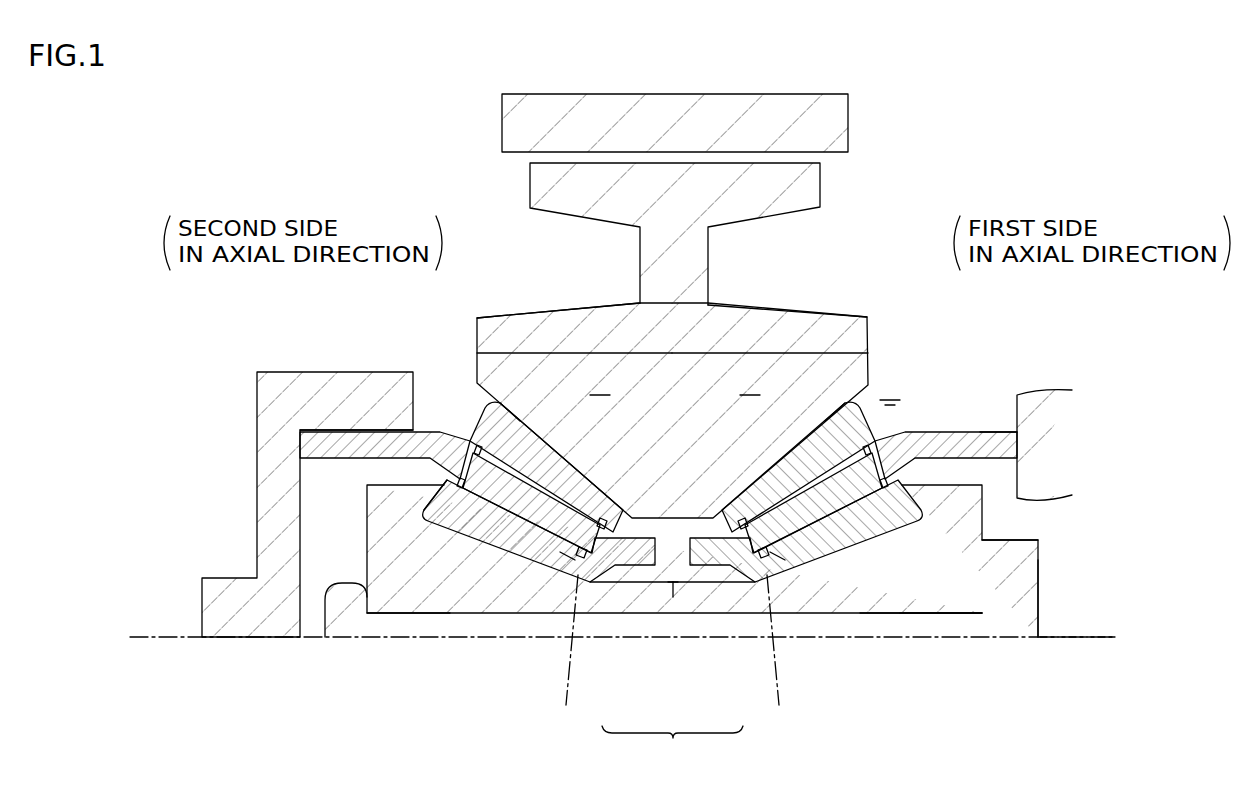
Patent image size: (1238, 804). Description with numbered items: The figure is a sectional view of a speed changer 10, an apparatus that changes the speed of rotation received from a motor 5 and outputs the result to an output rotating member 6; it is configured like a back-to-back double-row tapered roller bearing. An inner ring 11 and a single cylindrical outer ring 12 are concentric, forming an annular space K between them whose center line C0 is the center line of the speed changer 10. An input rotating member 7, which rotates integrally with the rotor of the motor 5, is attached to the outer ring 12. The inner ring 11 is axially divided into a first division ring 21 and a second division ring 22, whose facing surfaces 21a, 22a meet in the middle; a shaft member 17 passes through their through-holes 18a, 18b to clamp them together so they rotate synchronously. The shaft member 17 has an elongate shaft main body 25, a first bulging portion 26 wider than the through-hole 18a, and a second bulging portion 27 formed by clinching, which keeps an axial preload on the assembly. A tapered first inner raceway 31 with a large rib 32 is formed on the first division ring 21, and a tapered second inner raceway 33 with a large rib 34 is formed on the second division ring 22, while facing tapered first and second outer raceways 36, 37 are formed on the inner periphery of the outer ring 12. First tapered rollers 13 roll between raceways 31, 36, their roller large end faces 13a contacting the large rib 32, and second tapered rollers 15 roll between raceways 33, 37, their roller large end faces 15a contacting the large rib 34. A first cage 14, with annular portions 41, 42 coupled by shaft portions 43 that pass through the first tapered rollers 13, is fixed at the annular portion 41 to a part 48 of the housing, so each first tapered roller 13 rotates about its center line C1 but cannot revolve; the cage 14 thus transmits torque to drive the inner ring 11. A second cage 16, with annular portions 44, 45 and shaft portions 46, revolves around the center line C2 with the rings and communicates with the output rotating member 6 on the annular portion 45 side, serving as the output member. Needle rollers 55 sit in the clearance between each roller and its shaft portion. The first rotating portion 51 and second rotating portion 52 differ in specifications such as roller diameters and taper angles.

The motor 5 is at (826, 191).
The output rotating member 6 is at (260, 496).
The input rotating member 7 is at (773, 327).
The speed changer 10 is at (888, 400).
The inner ring 11 is at (672, 748).
The outer ring 12 is at (500, 350).
The first tapered rollers 13 is at (790, 420).
The roller large end face 13a is at (961, 420).
The first cage 14 is at (912, 424).
The second tapered rollers 15 is at (552, 455).
The roller large end face 15a is at (425, 515).
The second cage 16 is at (437, 432).
The shaft member 17 is at (1020, 605).
The through-hole 18a is at (962, 625).
The through-hole 18b is at (407, 625).
The first division ring 21 is at (806, 603).
The surface 21a is at (672, 597).
The second division ring 22 is at (539, 603).
The surface 22a is at (673, 598).
The shaft main body 25 is at (905, 620).
The first bulging portion 26 is at (1020, 565).
The second bulging portion 27 is at (343, 590).
The first inner raceway 31 is at (824, 545).
The large rib 32 is at (973, 512).
The second inner raceway 33 is at (522, 545).
The large rib 34 is at (375, 505).
The first outer raceway 36 is at (818, 422).
The second outer raceway 37 is at (488, 405).
The annular portion 41 is at (990, 432).
The annular portion 42 is at (722, 560).
The shaft portions 43 is at (848, 488).
The annular portion 44 is at (604, 560).
The annular portion 45 is at (340, 430).
The shaft portions 46 is at (497, 488).
The part of a housing 48 is at (1037, 405).
The first rotating portion 51 is at (750, 393).
The second rotating portion 52 is at (599, 392).
The needle rollers 55 is at (560, 552).
The annular space K is at (891, 400).
The center line C0 is at (1080, 650).
The center line C1 is at (784, 656).
The center line C2 is at (561, 656).